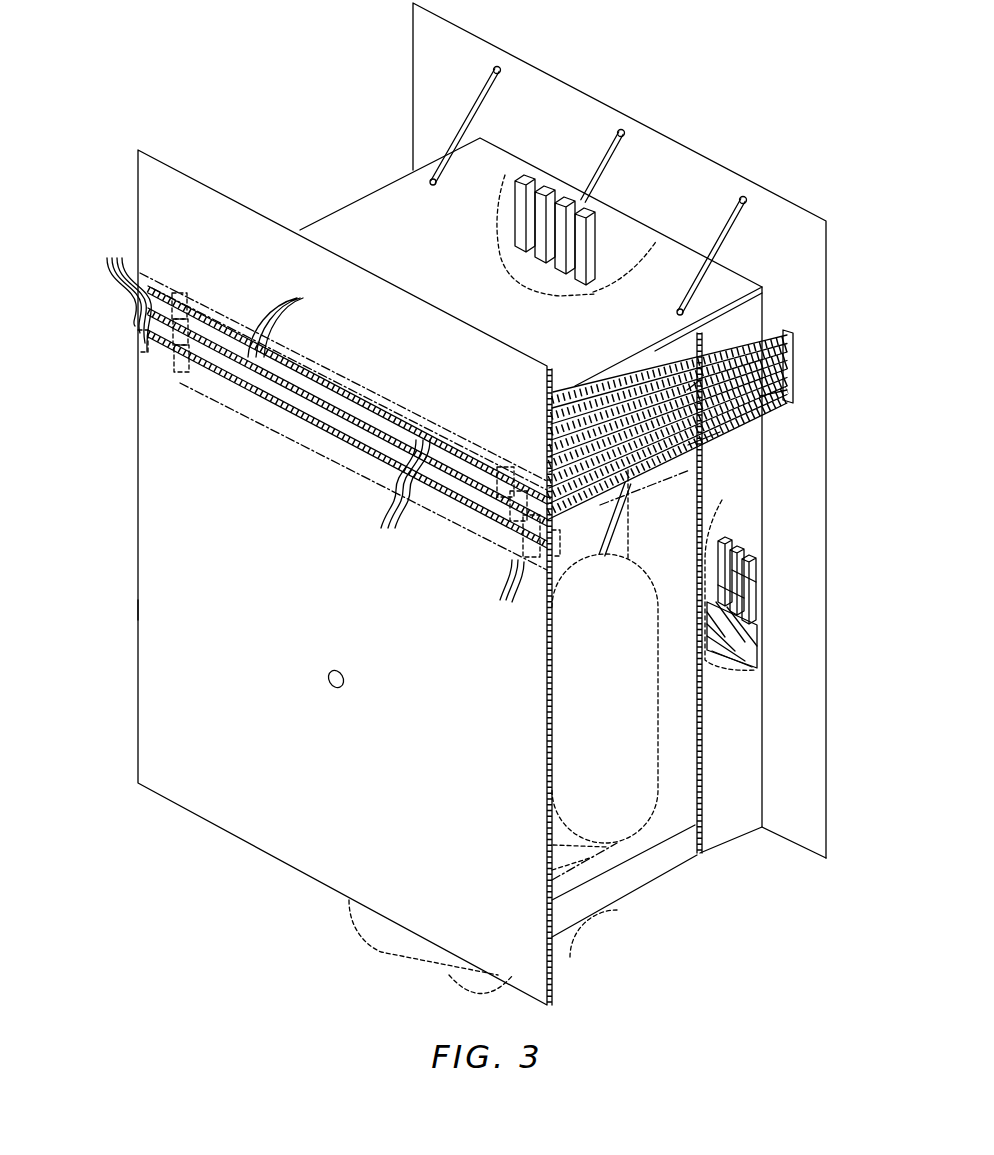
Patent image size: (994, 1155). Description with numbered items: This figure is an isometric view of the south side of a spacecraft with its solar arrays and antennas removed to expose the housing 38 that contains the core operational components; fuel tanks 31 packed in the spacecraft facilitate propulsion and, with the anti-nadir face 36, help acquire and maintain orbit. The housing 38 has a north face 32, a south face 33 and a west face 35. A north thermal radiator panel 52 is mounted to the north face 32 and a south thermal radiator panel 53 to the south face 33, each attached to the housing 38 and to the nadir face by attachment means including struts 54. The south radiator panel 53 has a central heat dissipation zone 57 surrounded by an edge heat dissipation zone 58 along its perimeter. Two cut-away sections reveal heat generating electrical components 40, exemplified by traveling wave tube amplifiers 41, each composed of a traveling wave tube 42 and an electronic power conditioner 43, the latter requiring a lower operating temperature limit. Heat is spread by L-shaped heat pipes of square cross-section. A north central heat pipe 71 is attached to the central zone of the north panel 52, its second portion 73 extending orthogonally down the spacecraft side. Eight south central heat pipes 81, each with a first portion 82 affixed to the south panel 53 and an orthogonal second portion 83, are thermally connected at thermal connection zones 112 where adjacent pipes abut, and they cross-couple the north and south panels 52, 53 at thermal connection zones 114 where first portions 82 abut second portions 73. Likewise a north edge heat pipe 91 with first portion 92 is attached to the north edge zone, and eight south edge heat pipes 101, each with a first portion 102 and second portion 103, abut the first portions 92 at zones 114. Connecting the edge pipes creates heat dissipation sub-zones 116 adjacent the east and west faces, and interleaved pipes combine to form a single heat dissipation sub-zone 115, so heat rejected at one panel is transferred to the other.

The fuel tanks 31 is at (645, 742).
The north face 32 is at (703, 132).
The south face 33 is at (190, 652).
The west face 35 is at (708, 885).
The anti-nadir face 36 is at (400, 945).
The housing 38 is at (735, 437).
The electrical components 40 is at (607, 245).
The traveling wave tube amplifiers 41 is at (778, 589).
The traveling wave tubes 42 is at (757, 573).
The electronic power conditioners 43 is at (748, 647).
The north thermal radiator panel 52 is at (638, 125).
The south thermal radiator panel 53 is at (163, 607).
The struts 54 is at (482, 100).
The central heat dissipation zone 57 is at (330, 647).
The edge heat dissipation zone 58 is at (148, 234).
The north central heat pipe 71 is at (769, 350).
The second portion 73 is at (687, 390).
The south central heat pipe 81 is at (339, 420).
The first portion 82 is at (290, 365).
The second portion 83 is at (340, 375).
The north edge heat pipe 91 is at (774, 396).
The first portion 92 is at (688, 445).
The south edge heat pipe 101 is at (505, 622).
The first portion 102 is at (497, 575).
The second portion 103 is at (622, 500).
The thermal connection zone 112 is at (380, 392).
The thermal connection zone 114 is at (697, 477).
The heat dissipation sub-zone 115 is at (258, 432).
The heat dissipation sub-zone 116 is at (138, 343).